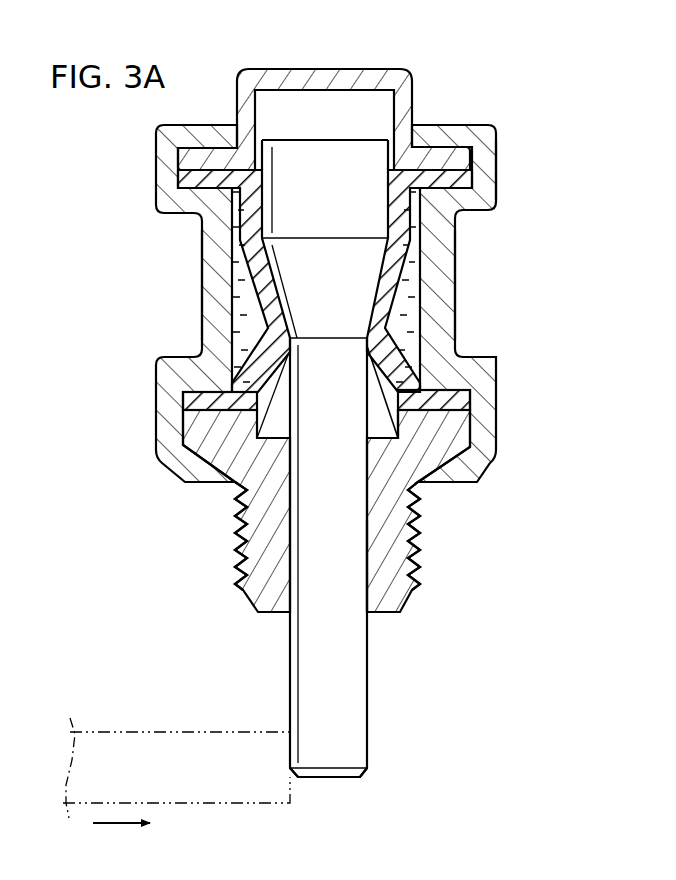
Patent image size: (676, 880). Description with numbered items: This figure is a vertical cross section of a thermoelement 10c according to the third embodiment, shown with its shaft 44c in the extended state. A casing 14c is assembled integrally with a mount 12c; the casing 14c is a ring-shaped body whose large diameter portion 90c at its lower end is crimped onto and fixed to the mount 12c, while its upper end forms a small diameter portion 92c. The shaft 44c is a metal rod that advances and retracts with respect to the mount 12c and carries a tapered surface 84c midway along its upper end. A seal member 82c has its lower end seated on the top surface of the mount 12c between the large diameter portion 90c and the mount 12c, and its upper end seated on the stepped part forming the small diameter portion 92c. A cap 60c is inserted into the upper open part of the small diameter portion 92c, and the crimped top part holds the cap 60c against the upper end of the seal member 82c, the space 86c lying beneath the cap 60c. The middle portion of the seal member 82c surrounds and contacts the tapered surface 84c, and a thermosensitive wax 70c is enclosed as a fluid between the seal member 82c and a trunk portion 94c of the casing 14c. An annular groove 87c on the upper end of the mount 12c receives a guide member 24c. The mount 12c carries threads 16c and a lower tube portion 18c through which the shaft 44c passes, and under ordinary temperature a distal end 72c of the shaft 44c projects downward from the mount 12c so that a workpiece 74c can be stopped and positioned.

The housing 10c is at (460, 262).
The mount 12c is at (418, 551).
The casing 14c is at (448, 311).
The external thread 16c is at (238, 565).
The pipe insertion portion 18c is at (366, 568).
The guide member 24c is at (383, 427).
The shaft 44c is at (352, 669).
The cap 60c is at (351, 77).
The thermosensitive wax 70c is at (231, 322).
The distal end 72c is at (338, 773).
The workpiece 74c is at (185, 746).
The seal member 82c is at (252, 232).
The tapered surface 84c is at (372, 305).
The upper space 86c is at (360, 153).
The annular groove 87c is at (377, 448).
The large diameter portion 90c is at (460, 430).
The small diameter portion 92c is at (486, 158).
The trunk portion 94c is at (202, 292).